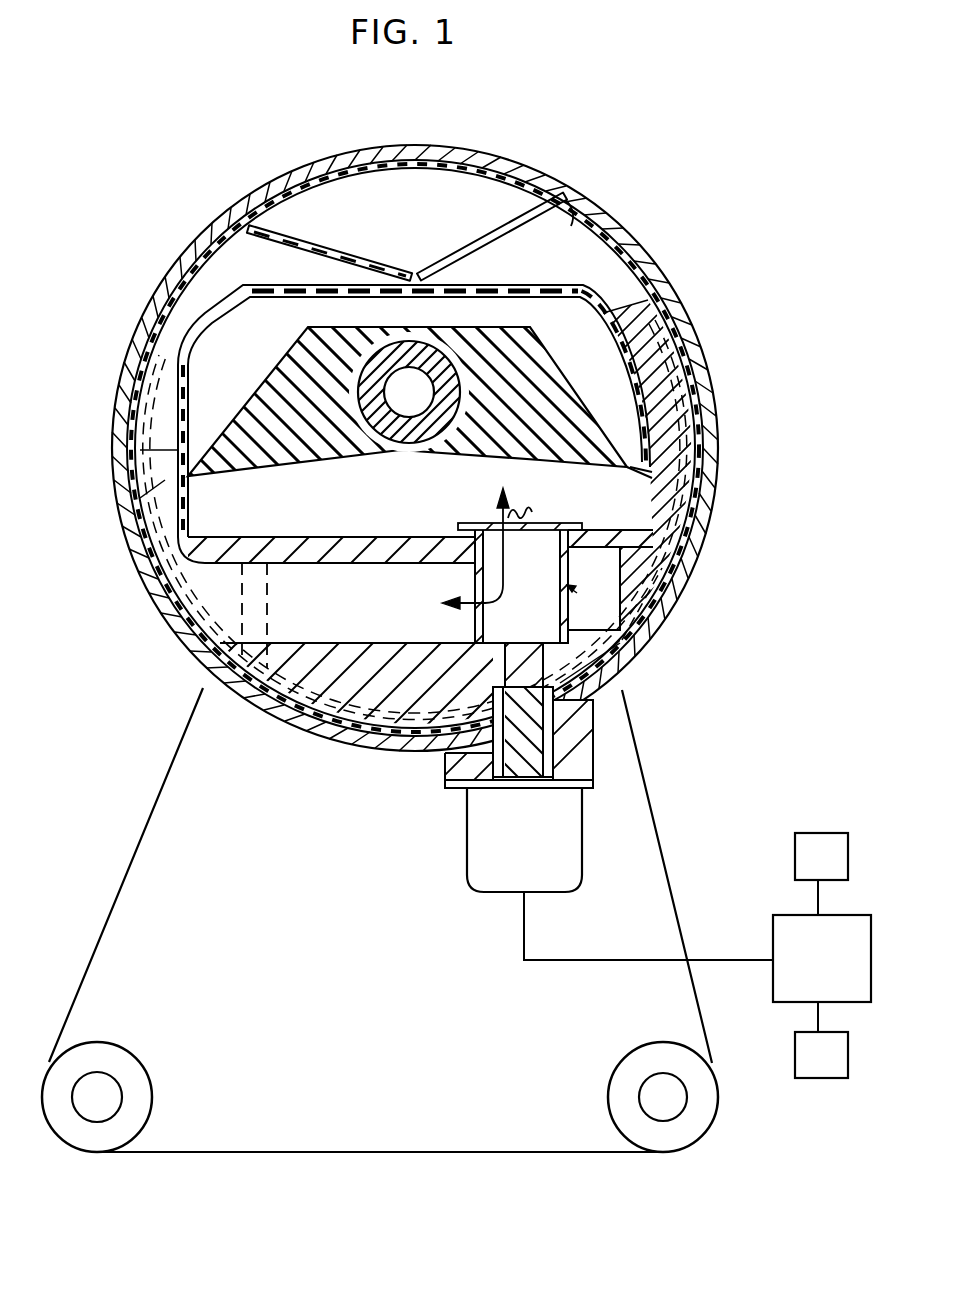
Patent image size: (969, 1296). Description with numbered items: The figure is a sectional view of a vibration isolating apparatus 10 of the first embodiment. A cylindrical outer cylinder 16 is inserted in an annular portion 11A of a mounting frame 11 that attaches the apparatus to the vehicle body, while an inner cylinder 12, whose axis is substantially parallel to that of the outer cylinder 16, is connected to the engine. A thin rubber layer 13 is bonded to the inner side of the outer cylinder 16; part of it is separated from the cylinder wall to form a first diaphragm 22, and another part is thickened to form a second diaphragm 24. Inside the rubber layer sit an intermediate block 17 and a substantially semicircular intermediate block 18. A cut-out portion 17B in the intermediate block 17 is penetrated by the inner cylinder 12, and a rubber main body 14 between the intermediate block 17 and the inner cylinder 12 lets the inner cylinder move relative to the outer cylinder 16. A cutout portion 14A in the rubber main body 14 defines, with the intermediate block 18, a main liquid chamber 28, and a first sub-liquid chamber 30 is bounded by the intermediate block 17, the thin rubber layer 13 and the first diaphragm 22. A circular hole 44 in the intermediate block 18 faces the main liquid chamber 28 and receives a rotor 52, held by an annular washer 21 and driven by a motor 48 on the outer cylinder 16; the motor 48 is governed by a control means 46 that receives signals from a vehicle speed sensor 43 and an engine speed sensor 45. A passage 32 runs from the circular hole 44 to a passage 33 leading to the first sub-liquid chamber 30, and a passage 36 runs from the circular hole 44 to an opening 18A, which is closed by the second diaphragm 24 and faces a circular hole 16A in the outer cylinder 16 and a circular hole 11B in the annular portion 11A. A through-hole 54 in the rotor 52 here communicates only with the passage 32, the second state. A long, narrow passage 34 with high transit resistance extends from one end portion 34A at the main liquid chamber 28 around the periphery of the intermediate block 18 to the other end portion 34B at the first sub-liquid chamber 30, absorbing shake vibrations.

The vibration isolating apparatus 10 is at (625, 222).
The mounting frame 11 is at (660, 822).
The annular portion 11A is at (556, 188).
The circular hole 11B is at (703, 540).
The inner cylinder 12 is at (458, 355).
The thin rubber layer 13 is at (572, 228).
The rubber main body 14 is at (256, 466).
The cutout portion 14A is at (547, 470).
The outer cylinder 16 is at (702, 376).
The circular hole 16A is at (697, 560).
The intermediate block 17 is at (636, 350).
The cut-out portion 17B is at (192, 395).
The intermediate block 18 is at (694, 468).
The opening 18A is at (693, 585).
The annular washer 21 is at (478, 523).
The first diaphragm 22 is at (272, 222).
The second diaphragm 24 is at (668, 620).
The main liquid chamber 28 is at (417, 490).
The first sub-liquid chamber 30 is at (627, 300).
The passage 32 is at (323, 563).
The passage 33 is at (140, 498).
The passage 34 is at (306, 735).
The one end portion 34A is at (265, 537).
The other end portion 34B is at (140, 450).
The passage 36 is at (597, 547).
The vehicle speed sensor 43 is at (795, 850).
The circular hole 44 is at (527, 497).
The engine speed sensor 45 is at (795, 1056).
The control means 46 is at (773, 928).
The motor 48 is at (467, 848).
The rotor 52 is at (577, 593).
The through-hole 54 is at (473, 563).